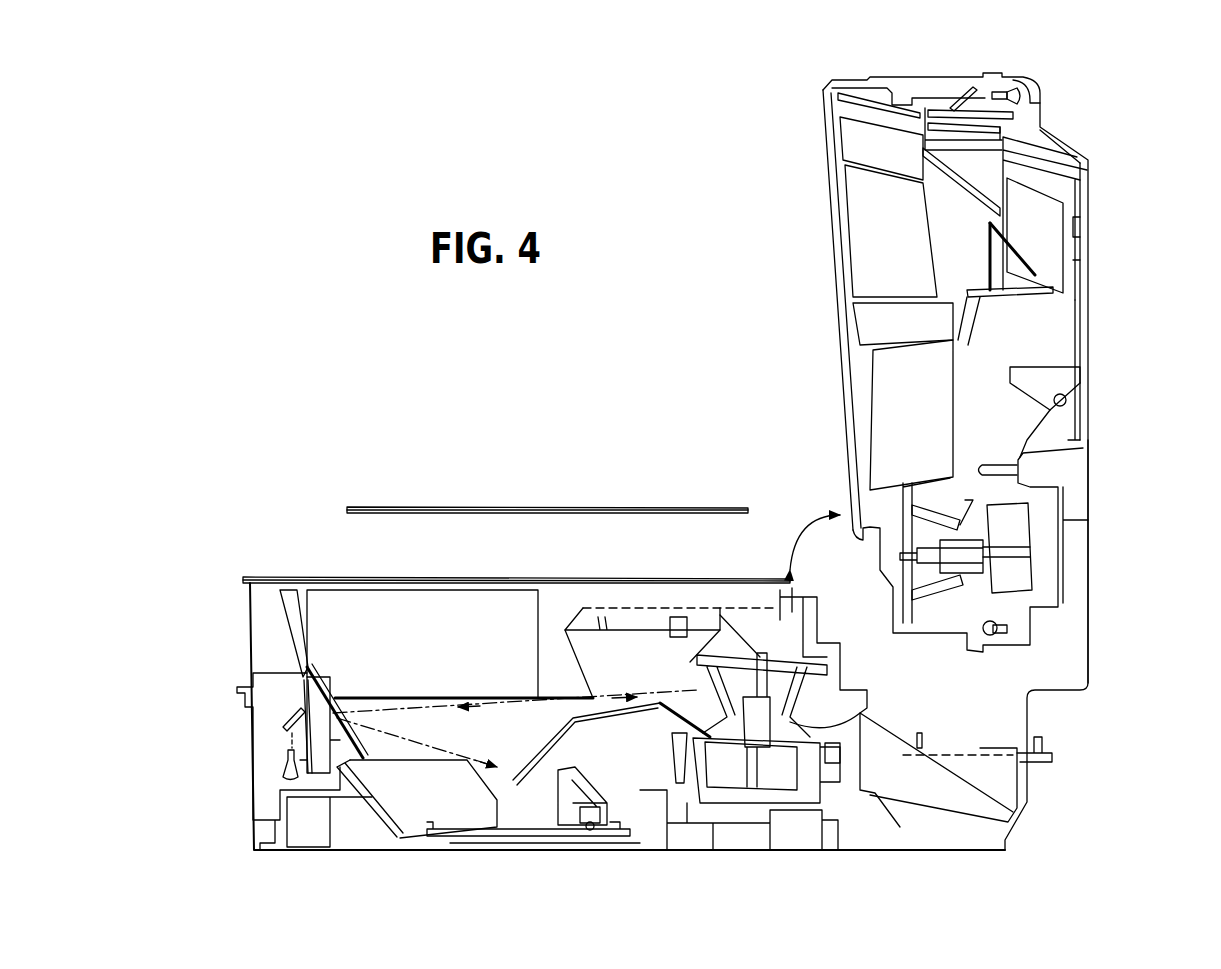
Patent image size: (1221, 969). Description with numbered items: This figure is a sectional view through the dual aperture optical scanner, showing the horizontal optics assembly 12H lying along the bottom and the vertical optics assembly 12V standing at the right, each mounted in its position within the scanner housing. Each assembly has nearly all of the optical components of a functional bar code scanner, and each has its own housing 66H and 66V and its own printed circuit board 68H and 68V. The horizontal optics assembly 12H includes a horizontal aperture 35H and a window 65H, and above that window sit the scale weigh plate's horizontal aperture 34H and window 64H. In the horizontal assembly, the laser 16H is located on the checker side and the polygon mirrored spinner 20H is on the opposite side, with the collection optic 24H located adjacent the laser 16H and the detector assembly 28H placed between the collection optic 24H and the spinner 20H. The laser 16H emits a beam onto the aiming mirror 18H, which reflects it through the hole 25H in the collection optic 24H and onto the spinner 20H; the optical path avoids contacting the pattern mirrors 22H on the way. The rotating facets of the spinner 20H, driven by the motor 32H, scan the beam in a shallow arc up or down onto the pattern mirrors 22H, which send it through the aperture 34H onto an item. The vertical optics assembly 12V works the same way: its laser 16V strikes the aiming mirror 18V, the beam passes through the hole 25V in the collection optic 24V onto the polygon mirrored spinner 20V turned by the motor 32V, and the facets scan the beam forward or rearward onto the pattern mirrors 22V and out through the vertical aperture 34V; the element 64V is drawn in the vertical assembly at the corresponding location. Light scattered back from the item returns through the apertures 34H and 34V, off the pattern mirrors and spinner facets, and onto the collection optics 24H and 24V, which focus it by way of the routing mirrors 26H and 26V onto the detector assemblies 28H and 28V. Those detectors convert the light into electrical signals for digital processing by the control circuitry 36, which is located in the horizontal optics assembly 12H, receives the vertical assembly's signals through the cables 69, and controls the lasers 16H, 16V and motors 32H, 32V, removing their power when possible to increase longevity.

The vertical optics assembly 12V is at (1092, 150).
The housing 66V is at (843, 73).
The laser 16V is at (1003, 85).
The aiming mirror 18V is at (965, 80).
The collection optic 24V is at (1013, 112).
The hole 25V is at (972, 128).
The pattern mirrors 22V is at (1042, 240).
The vertical aperture 34V is at (838, 380).
The vertical panel 64V is at (843, 430).
The printed circuit board 68V is at (1077, 320).
The routing mirror 26V is at (1030, 383).
The detector assembly 28V is at (1067, 406).
The motor 32V is at (1018, 568).
The polygon mirrored spinner 20V is at (940, 605).
The cables 69 is at (1092, 646).
The horizontal optics assembly 12H is at (522, 853).
The housing 66H is at (240, 618).
The horizontal aperture 34H is at (412, 507).
The window 64H is at (455, 507).
The horizontal aperture 35H is at (536, 577).
The window 65H is at (580, 578).
The aiming mirror 18H is at (292, 716).
The laser 16H is at (285, 762).
The collection optic 24H is at (310, 700).
The hole 25H is at (333, 700).
The pattern mirrors 22H is at (417, 787).
The printed circuit board 68H is at (468, 838).
The control circuitry 36 is at (480, 845).
The detector assembly 28H is at (590, 832).
The routing mirror 26H is at (623, 790).
The motor 32H is at (777, 782).
The polygon mirrored spinner 20H is at (862, 713).